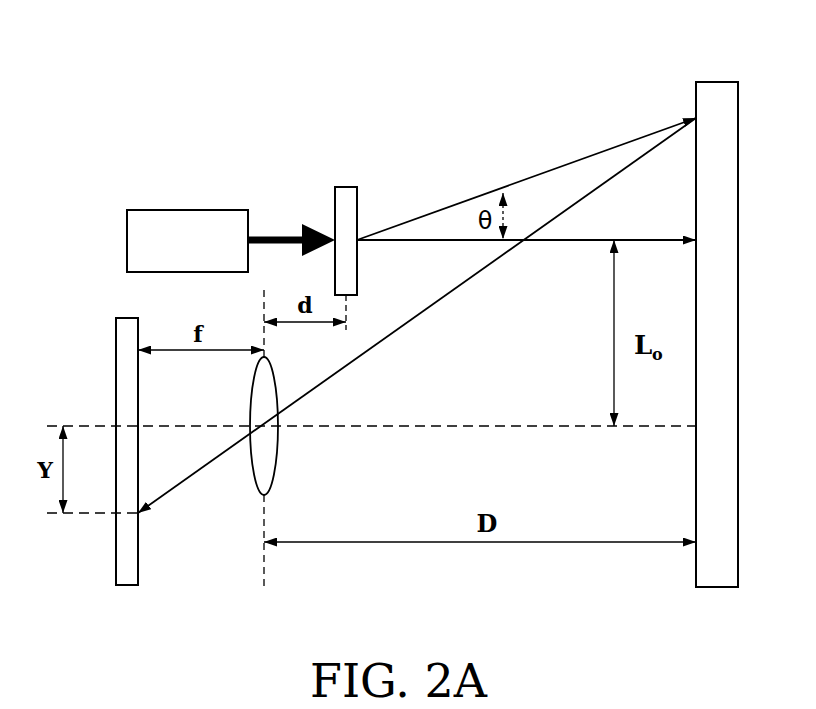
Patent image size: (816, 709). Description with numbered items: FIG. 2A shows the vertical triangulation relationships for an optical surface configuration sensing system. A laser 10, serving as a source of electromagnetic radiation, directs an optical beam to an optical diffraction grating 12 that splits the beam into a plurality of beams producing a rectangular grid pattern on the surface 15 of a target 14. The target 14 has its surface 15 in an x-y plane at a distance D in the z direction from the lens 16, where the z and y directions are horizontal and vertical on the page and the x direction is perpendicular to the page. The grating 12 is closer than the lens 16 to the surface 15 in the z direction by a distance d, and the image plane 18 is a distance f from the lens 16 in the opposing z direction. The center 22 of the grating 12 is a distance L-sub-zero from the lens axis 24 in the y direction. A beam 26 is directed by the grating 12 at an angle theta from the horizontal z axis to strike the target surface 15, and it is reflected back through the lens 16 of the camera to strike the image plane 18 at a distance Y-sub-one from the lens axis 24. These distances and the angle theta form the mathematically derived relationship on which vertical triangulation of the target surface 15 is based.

The laser 10 is at (217, 210).
The optical diffraction grating 12 is at (347, 187).
The target 14 is at (714, 82).
The target surface 15 is at (696, 474).
The lens 16 is at (280, 447).
The image plane 18 is at (138, 565).
The center of grating 22 is at (595, 243).
The lens axis 24 is at (482, 425).
The beam 26 is at (638, 137).